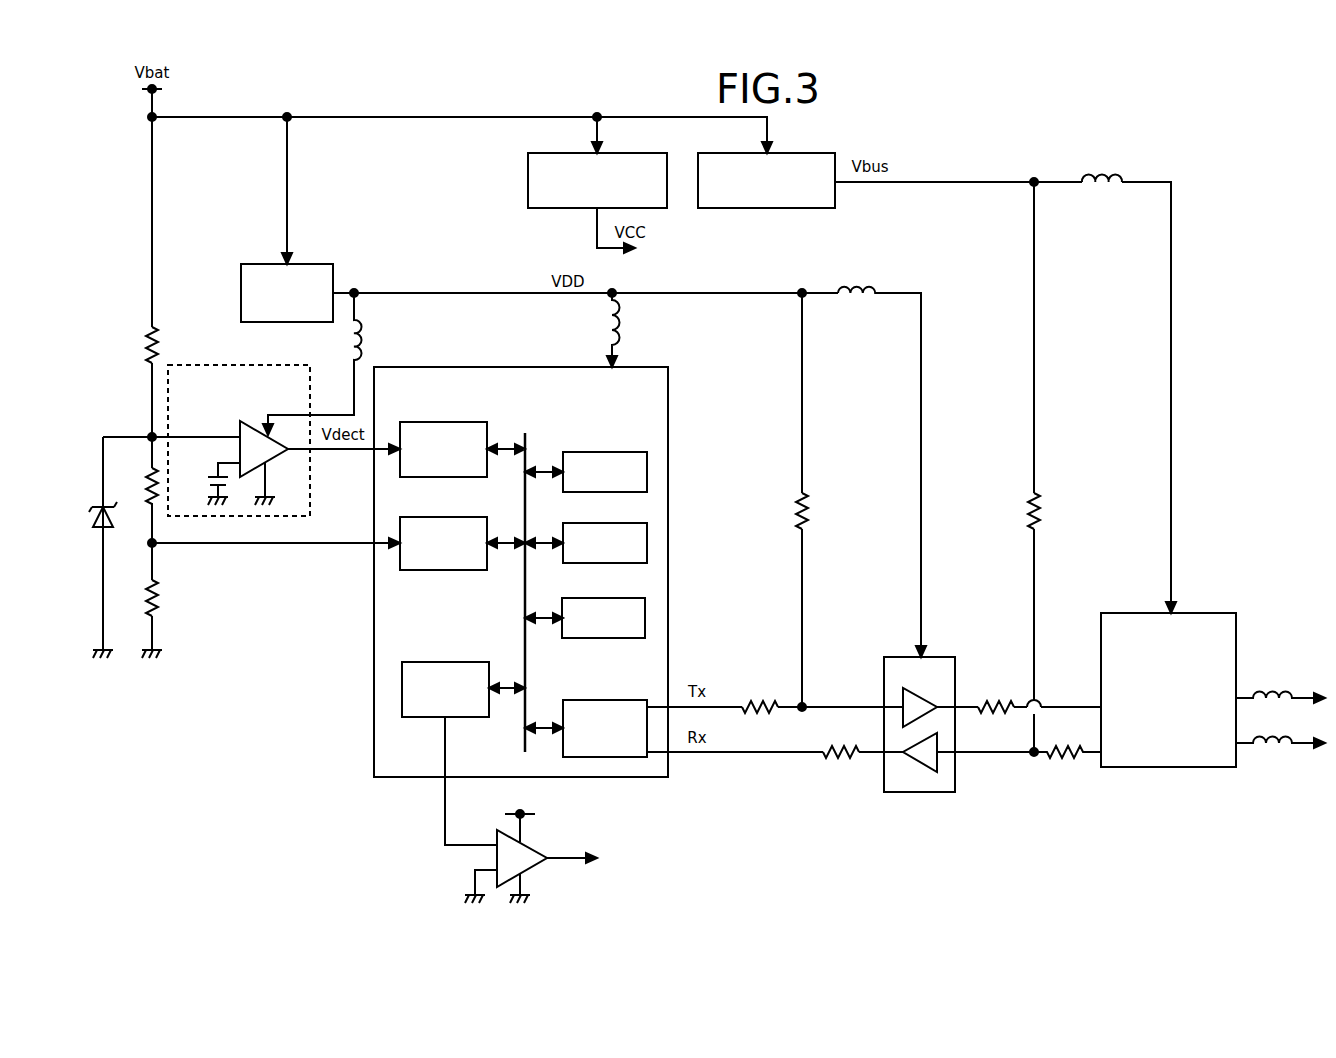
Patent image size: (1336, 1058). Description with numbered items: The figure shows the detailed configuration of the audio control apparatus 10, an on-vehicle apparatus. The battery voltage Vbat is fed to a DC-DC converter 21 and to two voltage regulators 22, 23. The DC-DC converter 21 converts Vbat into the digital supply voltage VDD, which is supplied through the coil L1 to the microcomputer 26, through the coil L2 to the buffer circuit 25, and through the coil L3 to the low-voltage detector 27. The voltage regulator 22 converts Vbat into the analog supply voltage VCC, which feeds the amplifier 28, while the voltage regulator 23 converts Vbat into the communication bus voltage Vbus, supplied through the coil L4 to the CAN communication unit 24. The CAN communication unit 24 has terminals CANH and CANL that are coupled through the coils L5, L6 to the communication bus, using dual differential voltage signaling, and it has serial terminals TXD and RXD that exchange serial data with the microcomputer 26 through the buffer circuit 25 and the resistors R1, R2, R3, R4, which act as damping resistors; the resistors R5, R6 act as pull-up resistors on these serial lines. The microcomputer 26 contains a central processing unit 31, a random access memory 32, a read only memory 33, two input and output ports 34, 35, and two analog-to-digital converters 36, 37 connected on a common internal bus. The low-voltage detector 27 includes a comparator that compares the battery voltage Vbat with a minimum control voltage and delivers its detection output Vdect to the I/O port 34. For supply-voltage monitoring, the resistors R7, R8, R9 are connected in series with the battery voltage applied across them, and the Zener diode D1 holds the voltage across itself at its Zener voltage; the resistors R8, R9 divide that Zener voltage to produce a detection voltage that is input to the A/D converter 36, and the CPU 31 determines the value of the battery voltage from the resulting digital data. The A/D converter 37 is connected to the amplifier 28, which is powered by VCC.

The audio control apparatus 10 is at (1210, 143).
The DC-DC converter 21 is at (302, 264).
The voltage regulator 22 is at (642, 153).
The voltage regulator 23 is at (804, 153).
The CAN communication unit 24 is at (1203, 613).
The buffer circuit 25 is at (938, 657).
The microcomputer 26 is at (640, 367).
The low-voltage detector 27 is at (291, 365).
The amplifier 28 is at (533, 850).
The central processing unit 31 is at (609, 452).
The random access memory 32 is at (609, 523).
The read only memory 33 is at (609, 598).
The I/O port 34 is at (459, 422).
The I/O port 35 is at (609, 700).
The A/D converter 36 is at (459, 517).
The A/D converter 37 is at (455, 662).
The resistor R1 is at (1051, 749).
The resistor R2 is at (982, 704).
The resistor R3 is at (828, 749).
The resistor R4 is at (746, 704).
The resistor R5 is at (1037, 495).
The resistor R6 is at (805, 495).
The resistor R7 is at (178, 344).
The resistor R8 is at (142, 474).
The resistor R9 is at (160, 596).
The coil L1 is at (622, 320).
The coil L2 is at (876, 287).
The coil L3 is at (364, 345).
The coil L4 is at (1118, 175).
The coil L5 is at (1285, 691).
The coil L6 is at (1285, 737).
The Zener diode D1 is at (110, 508).